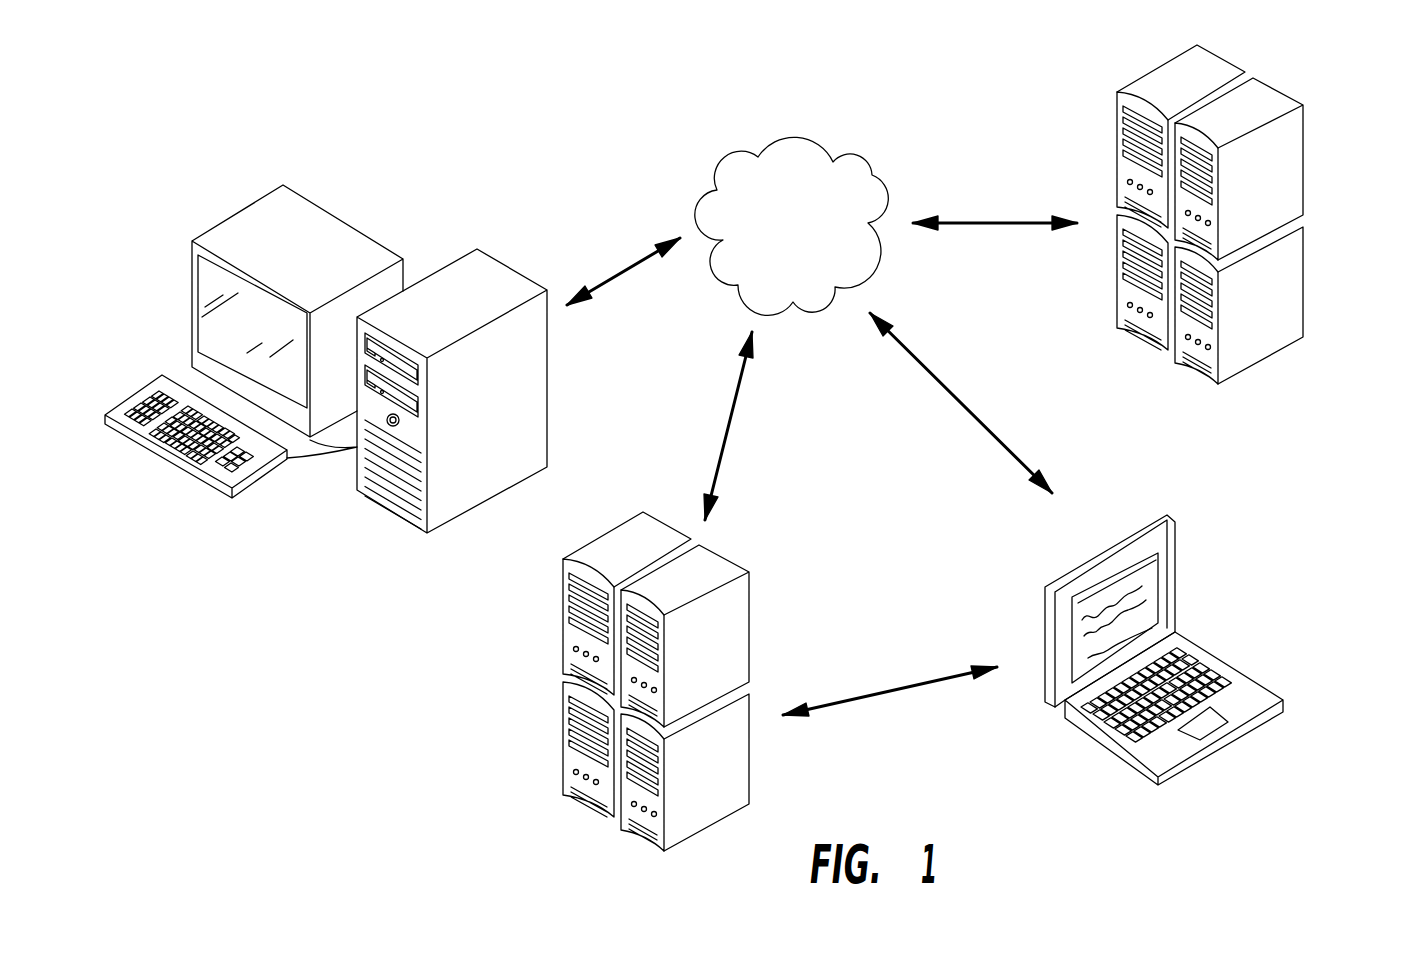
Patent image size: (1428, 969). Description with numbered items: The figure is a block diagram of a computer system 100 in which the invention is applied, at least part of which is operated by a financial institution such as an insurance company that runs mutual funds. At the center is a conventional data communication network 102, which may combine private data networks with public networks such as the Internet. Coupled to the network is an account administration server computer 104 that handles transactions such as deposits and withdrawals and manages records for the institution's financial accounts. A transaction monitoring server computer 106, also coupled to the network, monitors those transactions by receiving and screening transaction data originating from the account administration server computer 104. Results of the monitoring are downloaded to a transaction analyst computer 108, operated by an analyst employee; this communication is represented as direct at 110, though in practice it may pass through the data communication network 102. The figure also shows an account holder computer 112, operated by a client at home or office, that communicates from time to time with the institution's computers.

The computer system 100 is at (635, 82).
The data communication network 102 is at (810, 138).
The account administration server computer 104 is at (1313, 190).
The transaction monitoring server computer 106 is at (542, 655).
The transaction analyst computer 108 is at (1253, 662).
The direct communication 110 is at (890, 690).
The account holder computer 112 is at (212, 199).